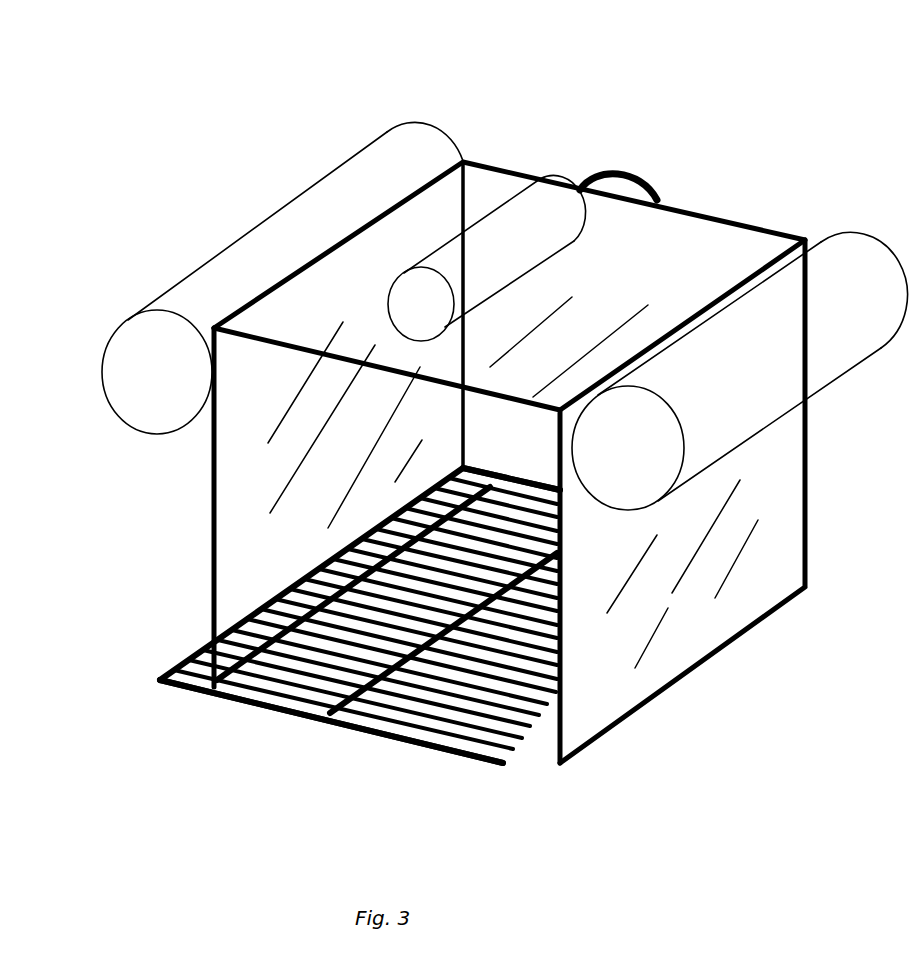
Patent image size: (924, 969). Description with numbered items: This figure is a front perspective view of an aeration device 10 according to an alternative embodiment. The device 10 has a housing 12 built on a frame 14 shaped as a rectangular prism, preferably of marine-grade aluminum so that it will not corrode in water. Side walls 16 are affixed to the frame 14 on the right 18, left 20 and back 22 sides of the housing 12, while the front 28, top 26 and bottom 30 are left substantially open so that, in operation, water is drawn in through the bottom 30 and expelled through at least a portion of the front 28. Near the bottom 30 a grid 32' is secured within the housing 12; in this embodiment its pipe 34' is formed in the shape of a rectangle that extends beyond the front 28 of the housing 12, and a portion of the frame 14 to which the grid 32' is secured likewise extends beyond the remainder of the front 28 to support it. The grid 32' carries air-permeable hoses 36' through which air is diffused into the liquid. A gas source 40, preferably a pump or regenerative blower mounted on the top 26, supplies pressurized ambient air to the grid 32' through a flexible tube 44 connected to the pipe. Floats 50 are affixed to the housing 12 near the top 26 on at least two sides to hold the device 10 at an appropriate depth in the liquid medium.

The device 10 is at (60, 118).
The housing 12 is at (836, 485).
The frame 14 is at (812, 548).
The side walls 16 is at (435, 198).
The right side 18 is at (152, 537).
The left side 20 is at (776, 646).
The back side 22 is at (728, 182).
The top 26 is at (565, 85).
The front 28 is at (345, 770).
The bottom 30 is at (543, 782).
The grid 32' is at (511, 459).
The pipe 34' is at (331, 742).
The grate 36' is at (360, 615).
The gas source 40 is at (547, 197).
The flexible tube 44 is at (620, 173).
The floats 50 is at (385, 160).